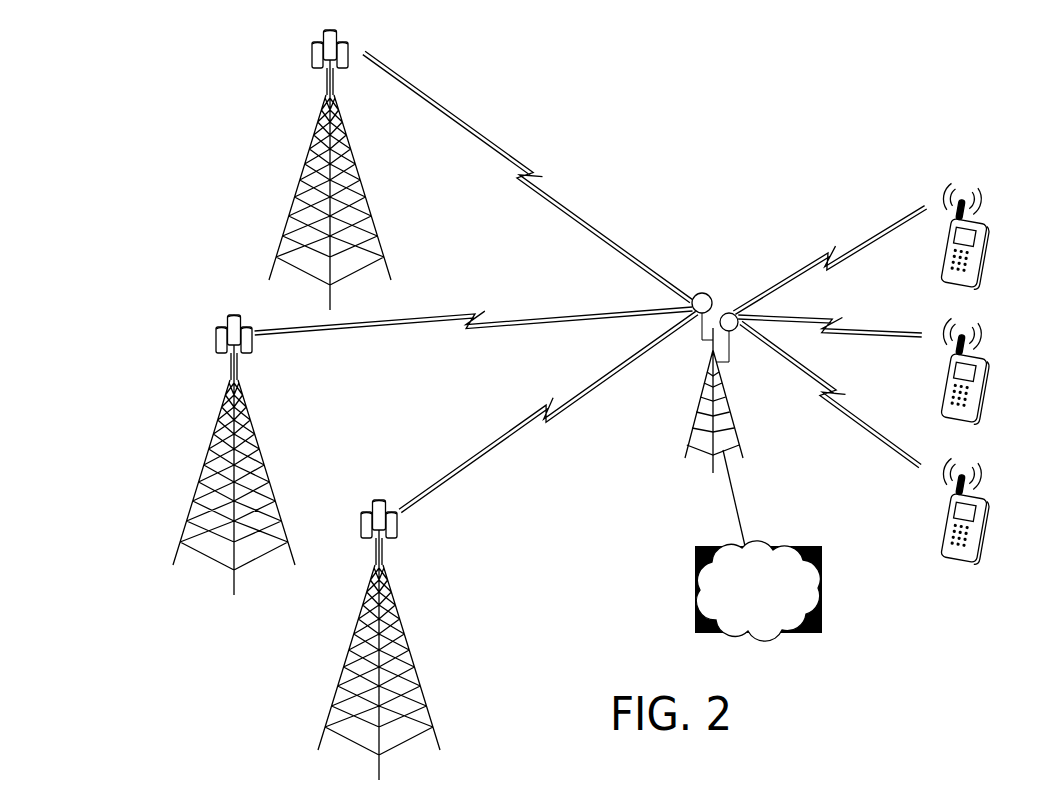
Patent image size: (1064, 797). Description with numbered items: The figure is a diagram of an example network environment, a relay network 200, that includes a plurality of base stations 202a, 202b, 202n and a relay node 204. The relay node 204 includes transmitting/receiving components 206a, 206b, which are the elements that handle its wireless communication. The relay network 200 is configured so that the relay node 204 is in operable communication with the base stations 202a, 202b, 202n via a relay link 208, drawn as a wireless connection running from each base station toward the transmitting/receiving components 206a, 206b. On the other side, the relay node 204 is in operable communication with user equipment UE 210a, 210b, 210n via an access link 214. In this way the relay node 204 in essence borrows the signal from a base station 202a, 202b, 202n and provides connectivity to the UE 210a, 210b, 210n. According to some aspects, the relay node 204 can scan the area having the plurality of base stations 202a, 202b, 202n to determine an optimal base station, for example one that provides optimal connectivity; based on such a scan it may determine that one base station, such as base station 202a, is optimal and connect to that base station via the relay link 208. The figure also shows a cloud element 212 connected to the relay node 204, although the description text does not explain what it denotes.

The relay network 200 is at (122, 141).
The base station 202a is at (302, 174).
The base station 202b is at (208, 451).
The base station 202n is at (348, 660).
The relay node 204 is at (690, 432).
The transmitting/receiving component 206a is at (700, 293).
The transmitting/receiving component 206b is at (730, 313).
The relay link 208 is at (524, 158).
The UE 210a is at (985, 247).
The UE 210b is at (986, 384).
The UE 210n is at (986, 524).
The network 212 is at (758, 591).
The access link 214 is at (877, 233).